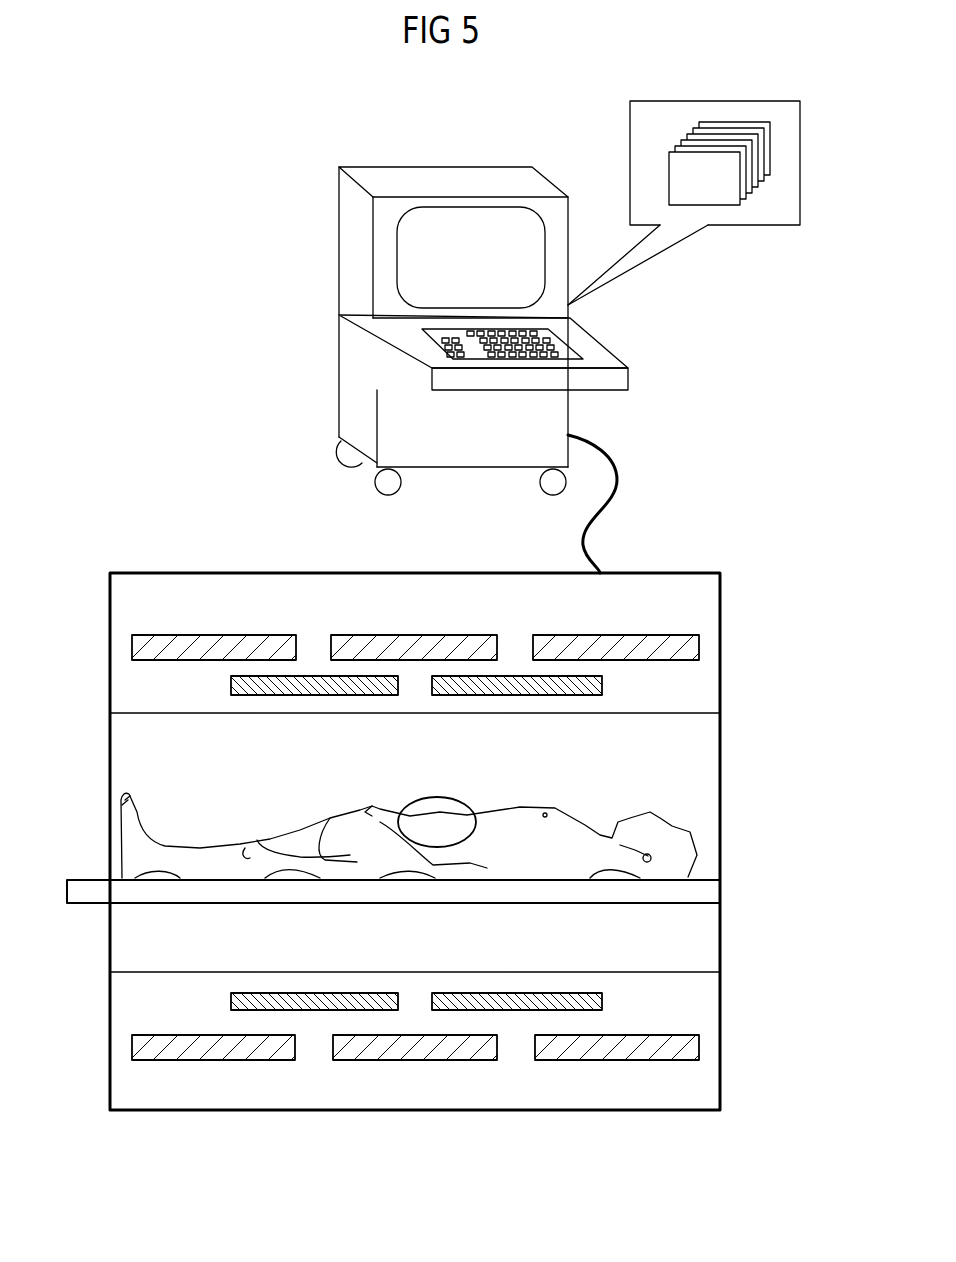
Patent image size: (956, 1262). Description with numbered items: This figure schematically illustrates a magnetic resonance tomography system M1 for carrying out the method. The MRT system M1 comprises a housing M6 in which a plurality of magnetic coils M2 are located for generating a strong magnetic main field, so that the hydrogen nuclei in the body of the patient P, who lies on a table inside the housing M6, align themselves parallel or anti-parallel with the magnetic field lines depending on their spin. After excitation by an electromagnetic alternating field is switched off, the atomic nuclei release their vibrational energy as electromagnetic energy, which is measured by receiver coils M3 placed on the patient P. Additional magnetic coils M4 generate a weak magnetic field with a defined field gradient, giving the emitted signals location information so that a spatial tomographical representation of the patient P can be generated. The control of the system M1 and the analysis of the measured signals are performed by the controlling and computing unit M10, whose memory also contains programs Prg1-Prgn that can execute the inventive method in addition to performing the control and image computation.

The magnetic resonance tomography system M1 is at (193, 197).
The controlling and computing unit M10 is at (618, 353).
The programs Prg1-Prgn is at (727, 205).
The housing M6 is at (550, 1112).
The magnetic coils M2 is at (132, 645).
The additional magnetic coils M4 is at (231, 686).
The receiver coils M3 is at (437, 797).
The patient P is at (527, 808).